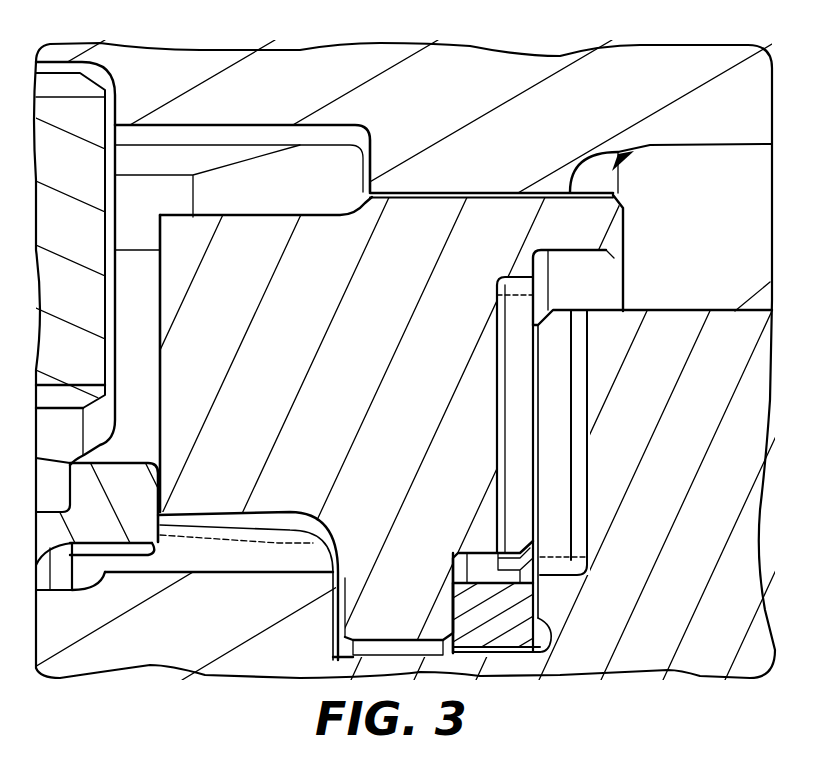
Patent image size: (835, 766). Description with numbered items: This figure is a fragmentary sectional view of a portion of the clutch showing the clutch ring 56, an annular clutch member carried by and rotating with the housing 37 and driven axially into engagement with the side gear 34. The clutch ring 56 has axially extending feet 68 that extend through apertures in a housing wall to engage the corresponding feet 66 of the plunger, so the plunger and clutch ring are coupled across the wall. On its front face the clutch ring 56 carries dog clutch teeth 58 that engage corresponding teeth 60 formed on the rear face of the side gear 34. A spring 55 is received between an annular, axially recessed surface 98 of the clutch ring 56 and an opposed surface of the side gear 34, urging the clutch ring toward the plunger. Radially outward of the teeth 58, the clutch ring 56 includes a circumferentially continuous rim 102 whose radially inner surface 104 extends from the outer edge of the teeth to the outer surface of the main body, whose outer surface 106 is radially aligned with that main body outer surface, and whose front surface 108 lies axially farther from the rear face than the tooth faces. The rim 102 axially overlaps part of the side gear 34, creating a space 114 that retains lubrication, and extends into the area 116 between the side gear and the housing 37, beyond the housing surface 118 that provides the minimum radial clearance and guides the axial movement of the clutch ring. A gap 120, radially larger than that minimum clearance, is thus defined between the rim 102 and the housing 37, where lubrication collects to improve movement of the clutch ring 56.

The first side gear 34 is at (757, 512).
The housing 37 is at (537, 72).
The spring 55 is at (512, 620).
The clutch ring 56 is at (377, 295).
The clutch teeth 58 is at (513, 495).
The engagement feature 60 is at (553, 437).
The feet of plunger 66 is at (130, 483).
The feet of clutch ring 68 is at (197, 360).
The axially recessed surface 98 is at (453, 600).
The rim 102 is at (612, 230).
The radially inner surface of rim 104 is at (606, 251).
The outer surface of rim 106 is at (624, 193).
The front surface of rim 108 is at (625, 212).
The space 114 is at (590, 288).
The area 116 is at (633, 160).
The housing surface 118 is at (518, 195).
The gap 120 is at (598, 172).